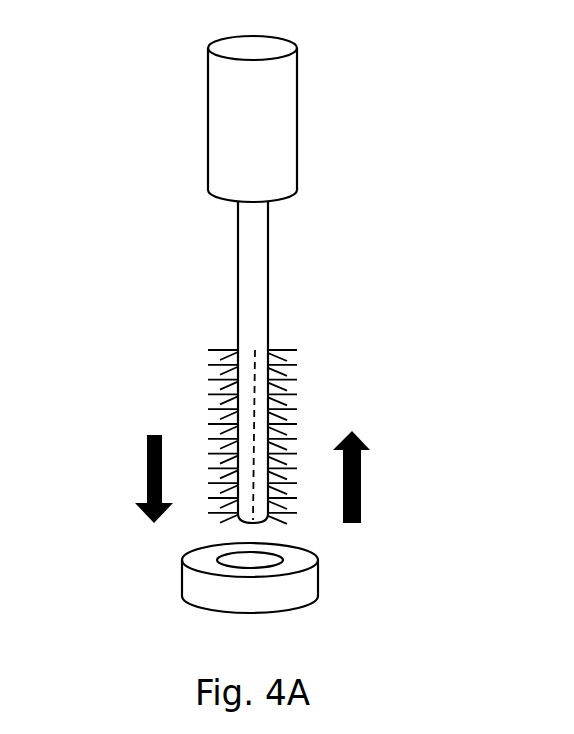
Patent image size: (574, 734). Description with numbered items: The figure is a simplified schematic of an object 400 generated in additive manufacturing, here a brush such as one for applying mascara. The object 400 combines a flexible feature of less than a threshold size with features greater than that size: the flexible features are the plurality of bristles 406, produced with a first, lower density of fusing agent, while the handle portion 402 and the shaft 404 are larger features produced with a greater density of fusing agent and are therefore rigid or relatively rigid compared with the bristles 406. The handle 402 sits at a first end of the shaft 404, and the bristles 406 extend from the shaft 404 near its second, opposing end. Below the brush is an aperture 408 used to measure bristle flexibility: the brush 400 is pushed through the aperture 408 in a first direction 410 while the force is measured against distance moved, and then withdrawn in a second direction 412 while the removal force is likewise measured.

The object 400 is at (130, 110).
The handle portion 402 is at (287, 93).
The shaft 404 is at (262, 267).
The bristles 406 is at (293, 367).
The aperture 408 is at (248, 560).
The first direction 410 is at (147, 480).
The second direction 412 is at (361, 478).